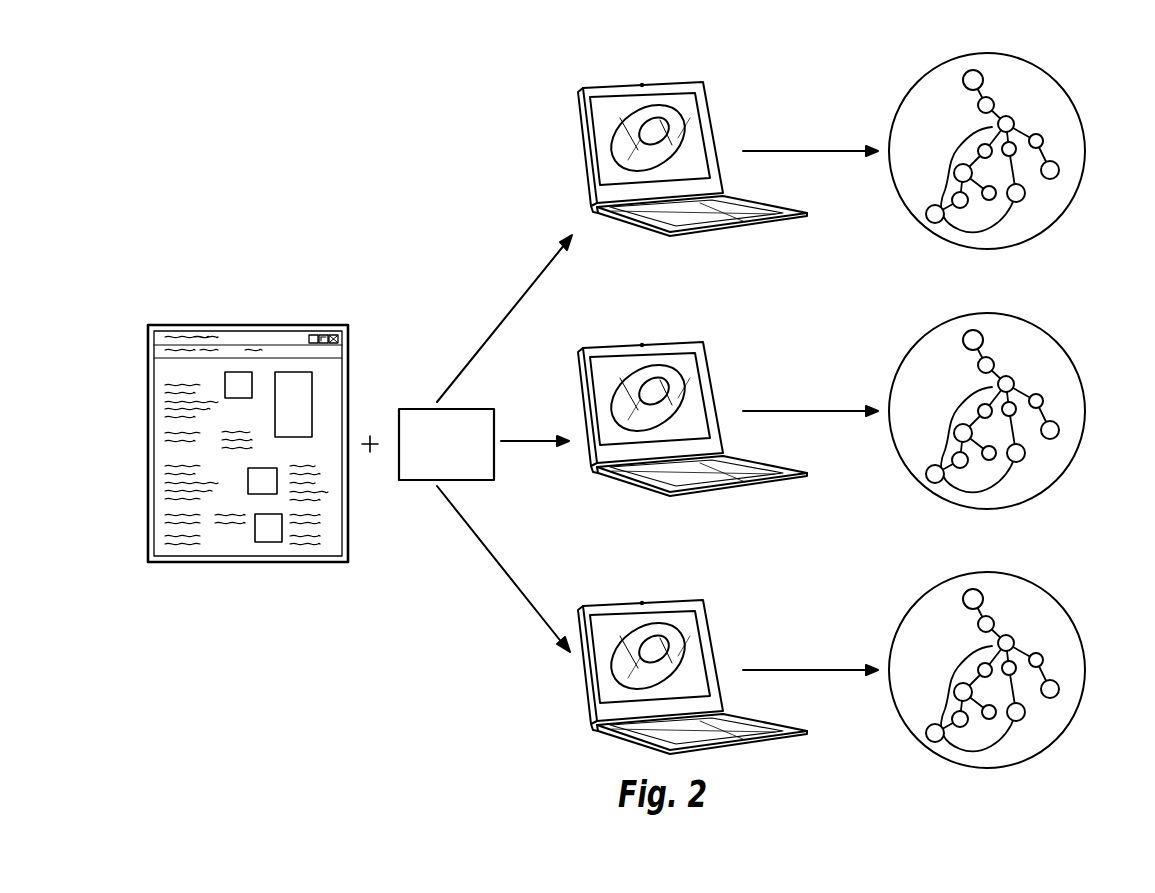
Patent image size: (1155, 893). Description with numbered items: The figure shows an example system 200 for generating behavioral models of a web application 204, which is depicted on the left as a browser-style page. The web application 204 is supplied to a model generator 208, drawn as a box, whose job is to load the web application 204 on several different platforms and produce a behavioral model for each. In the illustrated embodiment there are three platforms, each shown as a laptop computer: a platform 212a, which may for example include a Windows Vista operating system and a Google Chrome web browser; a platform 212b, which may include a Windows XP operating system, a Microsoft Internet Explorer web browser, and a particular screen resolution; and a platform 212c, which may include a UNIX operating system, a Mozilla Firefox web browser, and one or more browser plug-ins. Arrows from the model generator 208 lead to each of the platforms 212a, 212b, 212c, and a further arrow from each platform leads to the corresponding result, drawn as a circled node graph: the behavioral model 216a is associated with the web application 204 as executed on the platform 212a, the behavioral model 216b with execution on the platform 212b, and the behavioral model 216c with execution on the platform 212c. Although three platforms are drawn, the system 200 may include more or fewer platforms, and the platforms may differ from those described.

The system 200 is at (303, 88).
The web application 204 is at (266, 325).
The model generator 208 is at (413, 409).
The platform 212a is at (626, 84).
The platform 212b is at (626, 344).
The platform 212c is at (626, 602).
The behavioral model 216a is at (1052, 78).
The behavioral model 216b is at (1052, 338).
The behavioral model 216c is at (1052, 597).